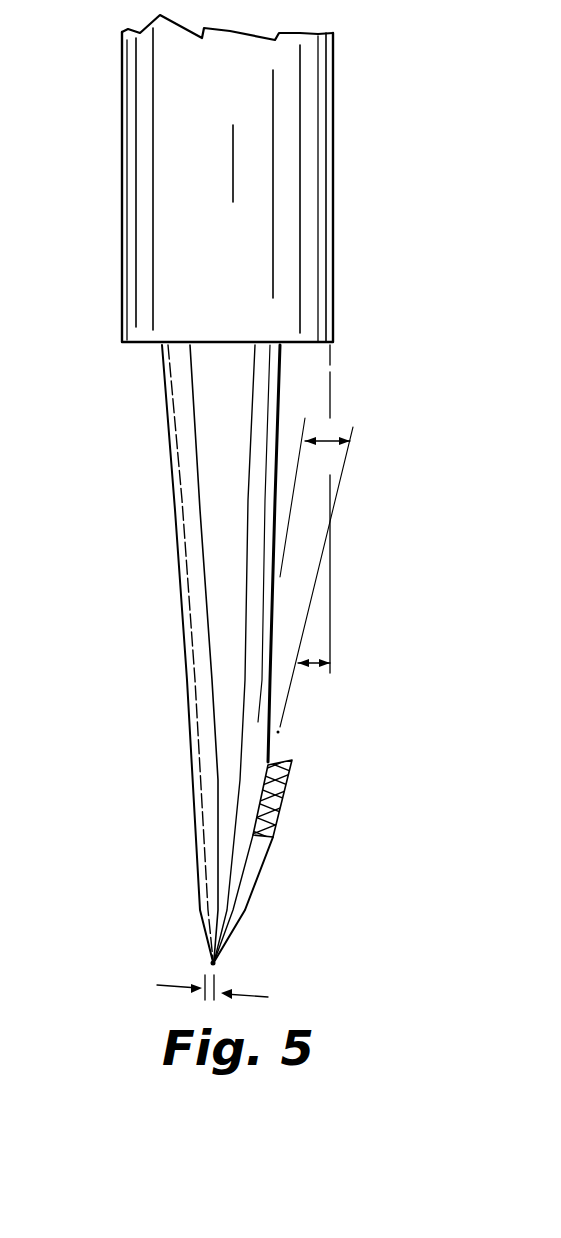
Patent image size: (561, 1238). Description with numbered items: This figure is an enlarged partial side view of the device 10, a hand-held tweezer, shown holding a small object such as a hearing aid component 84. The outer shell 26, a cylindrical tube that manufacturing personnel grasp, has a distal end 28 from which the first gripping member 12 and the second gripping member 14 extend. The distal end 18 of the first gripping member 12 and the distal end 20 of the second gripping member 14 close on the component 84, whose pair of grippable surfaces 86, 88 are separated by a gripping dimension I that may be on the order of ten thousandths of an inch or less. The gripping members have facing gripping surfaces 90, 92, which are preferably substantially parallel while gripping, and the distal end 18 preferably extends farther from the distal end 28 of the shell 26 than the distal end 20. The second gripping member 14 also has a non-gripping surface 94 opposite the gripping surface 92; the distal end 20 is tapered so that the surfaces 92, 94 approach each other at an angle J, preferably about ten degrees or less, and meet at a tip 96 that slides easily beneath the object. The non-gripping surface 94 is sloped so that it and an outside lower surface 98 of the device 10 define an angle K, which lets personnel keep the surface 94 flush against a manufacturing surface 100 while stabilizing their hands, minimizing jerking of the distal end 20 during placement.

The device 10 is at (110, 360).
The first gripping member 12 is at (174, 655).
The second gripping member 14 is at (288, 393).
The distal end of the first gripping member 18 is at (194, 932).
The distal end of the second gripping member 20 is at (252, 904).
The outer shell 26 is at (342, 207).
The distal end of the outer shell 28 is at (114, 240).
The hearing aid component 84 is at (218, 962).
The grippable surface 86 is at (210, 960).
The grippable surface 88 is at (240, 951).
The gripping surface of the first gripping member 90 is at (222, 832).
The gripping surface of the second gripping member 92 is at (225, 870).
The non-gripping surface 94 is at (238, 920).
The tip 96 is at (242, 934).
The outside lower surface 98 is at (333, 260).
The manufacturing surface 100 is at (291, 786).
The gripping dimension I is at (194, 985).
The angle J is at (337, 439).
The angle K is at (312, 670).